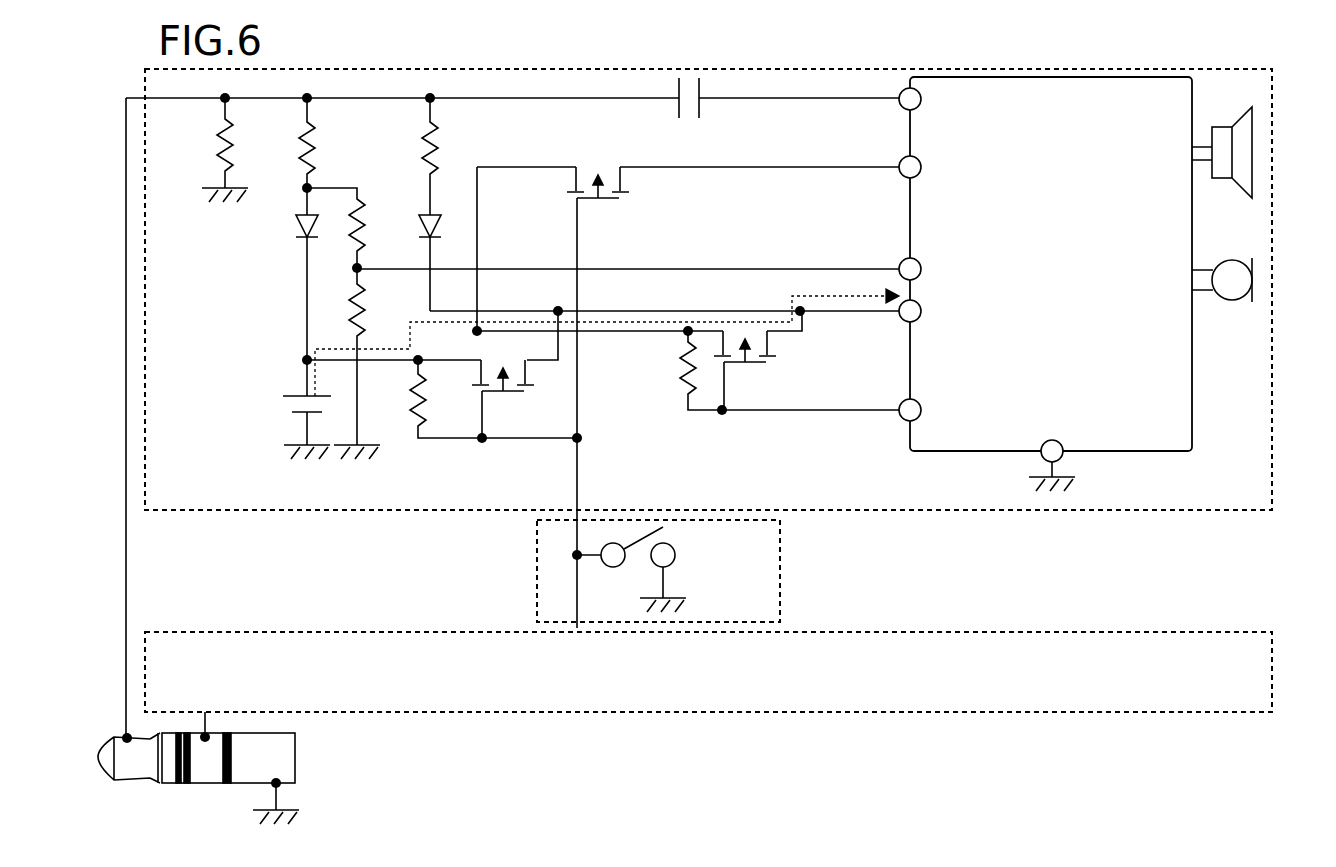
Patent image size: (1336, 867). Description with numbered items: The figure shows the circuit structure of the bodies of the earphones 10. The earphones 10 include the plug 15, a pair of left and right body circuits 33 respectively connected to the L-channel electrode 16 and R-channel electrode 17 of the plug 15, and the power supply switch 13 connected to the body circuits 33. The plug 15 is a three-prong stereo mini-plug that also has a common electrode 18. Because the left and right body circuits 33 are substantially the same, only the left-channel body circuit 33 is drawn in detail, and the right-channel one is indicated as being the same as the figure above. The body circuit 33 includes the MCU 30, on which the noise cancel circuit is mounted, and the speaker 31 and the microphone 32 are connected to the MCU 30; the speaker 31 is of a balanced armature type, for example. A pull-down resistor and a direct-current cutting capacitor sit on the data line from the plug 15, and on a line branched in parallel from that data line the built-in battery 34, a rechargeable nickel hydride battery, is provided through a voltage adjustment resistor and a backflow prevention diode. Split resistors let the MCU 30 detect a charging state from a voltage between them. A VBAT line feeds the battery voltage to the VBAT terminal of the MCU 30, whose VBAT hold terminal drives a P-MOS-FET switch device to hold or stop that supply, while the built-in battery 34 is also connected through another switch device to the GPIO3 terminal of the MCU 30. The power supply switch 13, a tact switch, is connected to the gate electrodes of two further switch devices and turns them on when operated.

The earphones 10 is at (726, 63).
The power supply switch 13 is at (782, 573).
The plug 15 is at (287, 757).
The L-channel electrode 16 is at (132, 770).
The R-channel electrode 17 is at (200, 772).
The common electrode 18 is at (240, 772).
The MCU 30 is at (1192, 412).
The speaker 31 is at (1243, 152).
The microphone 32 is at (1243, 280).
The body circuit 33 is at (972, 512).
The built-in battery 34 is at (293, 394).